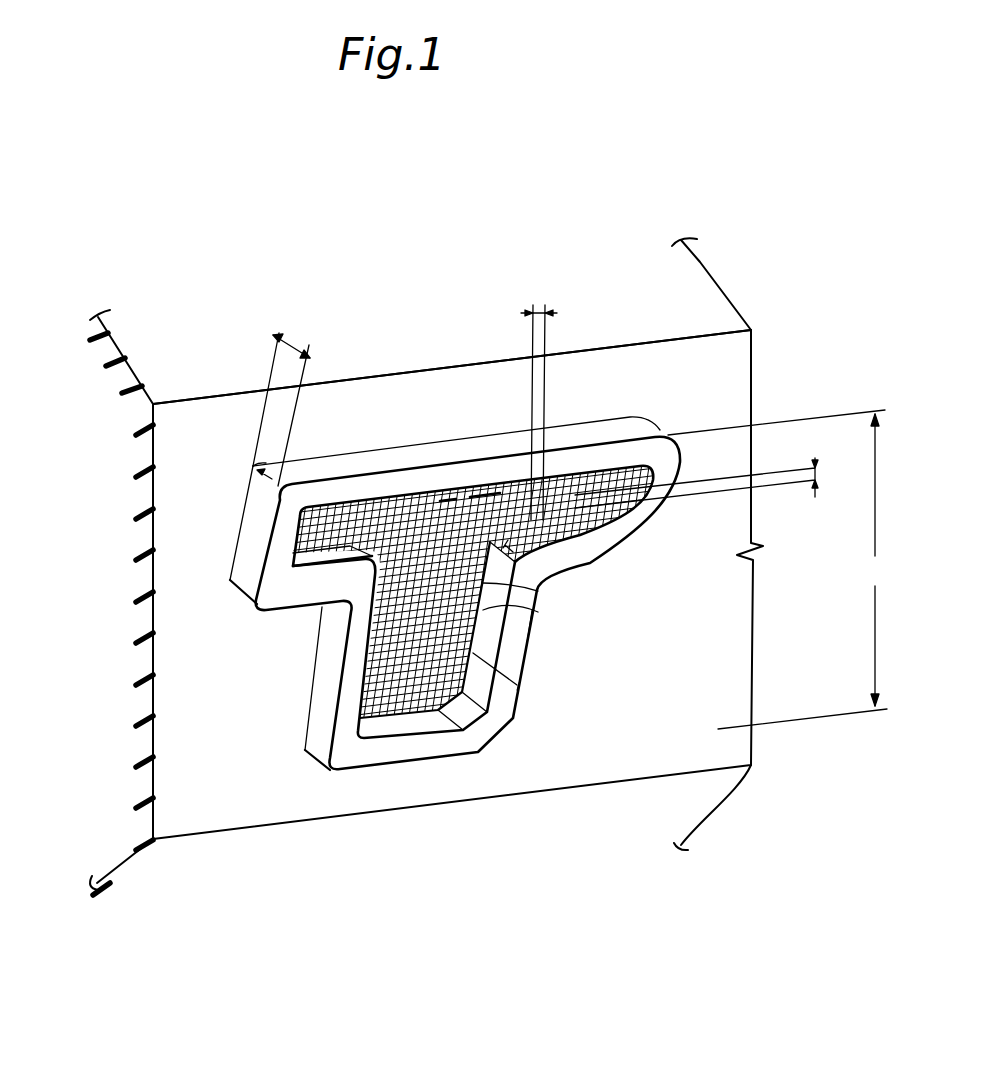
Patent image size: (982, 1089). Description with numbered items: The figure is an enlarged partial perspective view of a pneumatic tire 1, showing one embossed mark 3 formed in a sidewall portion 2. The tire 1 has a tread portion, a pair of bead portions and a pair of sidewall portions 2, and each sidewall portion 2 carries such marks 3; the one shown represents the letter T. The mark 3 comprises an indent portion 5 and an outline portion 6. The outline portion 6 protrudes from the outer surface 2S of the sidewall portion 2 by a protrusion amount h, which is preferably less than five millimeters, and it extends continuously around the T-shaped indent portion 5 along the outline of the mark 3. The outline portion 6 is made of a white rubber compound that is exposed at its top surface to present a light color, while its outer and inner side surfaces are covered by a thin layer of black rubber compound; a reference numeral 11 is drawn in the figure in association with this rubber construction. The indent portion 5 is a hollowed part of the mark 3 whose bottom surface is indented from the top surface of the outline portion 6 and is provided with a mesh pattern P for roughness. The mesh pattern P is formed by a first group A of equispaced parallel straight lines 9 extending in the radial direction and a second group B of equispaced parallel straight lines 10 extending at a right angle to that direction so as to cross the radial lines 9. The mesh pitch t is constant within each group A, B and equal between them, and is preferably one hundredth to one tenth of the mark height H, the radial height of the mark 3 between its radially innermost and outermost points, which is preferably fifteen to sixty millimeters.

The tire 1 is at (763, 252).
The sidewall portion 2 is at (718, 371).
The outer surface of the sidewall portion 2S is at (727, 400).
The embossed mark 3 is at (367, 930).
The indent portion 5 is at (418, 722).
The outline portion 6 is at (347, 752).
The straight lines 9 is at (496, 494).
The straight lines 10 is at (538, 591).
The bottom wall 11 is at (448, 748).
The first group of lines A is at (448, 495).
The second group of lines B is at (527, 642).
The mesh pattern P is at (517, 685).
The height of the mark H is at (777, 569).
The amount of protrusion h is at (288, 346).
The mesh pitch t is at (542, 300).